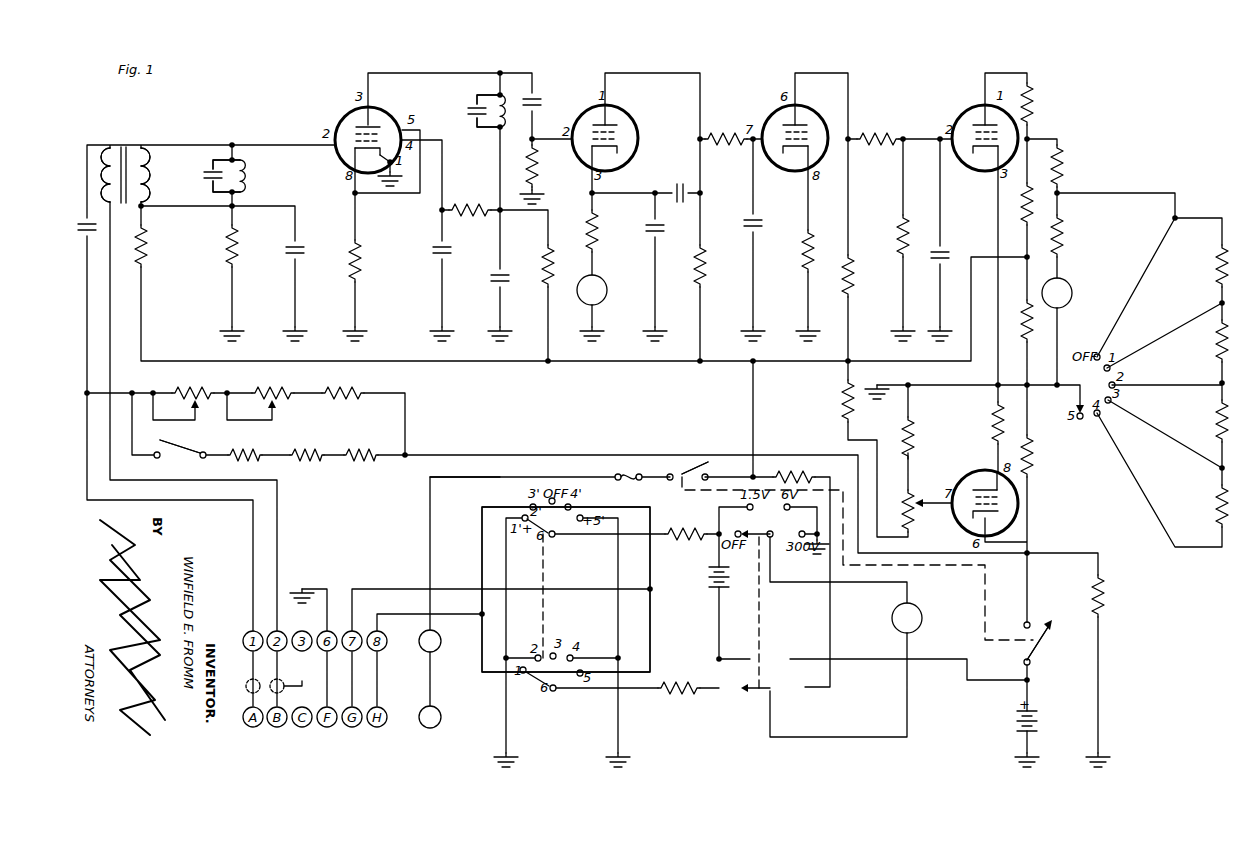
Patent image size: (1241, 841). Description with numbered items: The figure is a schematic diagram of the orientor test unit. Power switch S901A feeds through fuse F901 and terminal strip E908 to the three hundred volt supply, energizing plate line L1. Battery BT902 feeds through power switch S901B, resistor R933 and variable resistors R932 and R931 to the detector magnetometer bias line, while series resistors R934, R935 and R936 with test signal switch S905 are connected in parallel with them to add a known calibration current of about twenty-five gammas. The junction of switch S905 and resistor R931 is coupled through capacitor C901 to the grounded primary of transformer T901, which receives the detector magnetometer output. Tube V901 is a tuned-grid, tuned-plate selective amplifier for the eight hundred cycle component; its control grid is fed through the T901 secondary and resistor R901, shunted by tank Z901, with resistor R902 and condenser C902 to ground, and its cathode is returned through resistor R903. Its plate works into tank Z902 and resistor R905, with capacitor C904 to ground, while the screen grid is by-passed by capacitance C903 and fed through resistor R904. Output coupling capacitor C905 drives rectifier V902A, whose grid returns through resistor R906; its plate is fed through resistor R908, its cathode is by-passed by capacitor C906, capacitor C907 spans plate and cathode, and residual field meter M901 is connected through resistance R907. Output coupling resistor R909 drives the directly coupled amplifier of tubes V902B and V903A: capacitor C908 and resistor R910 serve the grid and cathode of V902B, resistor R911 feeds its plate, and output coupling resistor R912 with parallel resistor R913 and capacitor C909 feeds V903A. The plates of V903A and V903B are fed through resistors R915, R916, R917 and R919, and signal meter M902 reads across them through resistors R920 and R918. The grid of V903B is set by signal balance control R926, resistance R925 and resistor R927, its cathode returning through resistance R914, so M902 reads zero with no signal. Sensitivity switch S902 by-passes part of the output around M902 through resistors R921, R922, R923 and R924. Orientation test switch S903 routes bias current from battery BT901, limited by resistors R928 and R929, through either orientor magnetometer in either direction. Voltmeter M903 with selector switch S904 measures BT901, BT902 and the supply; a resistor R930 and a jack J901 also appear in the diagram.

The transformer T901 is at (122, 164).
The capacitor C901 is at (96, 228).
The resistor R901 is at (165, 246).
The tank Z901 is at (240, 170).
The resistor R902 is at (251, 246).
The condenser C902 is at (312, 250).
The resistor R903 is at (377, 259).
The amplifier tube V901 is at (376, 131).
The tank Z902 is at (479, 102).
The resistor R904 is at (470, 204).
The by-pass capacitance C903 is at (460, 247).
The capacitor C904 is at (479, 278).
The resistor R905 is at (532, 266).
The output coupling capacitor C905 is at (551, 96).
The resistor R906 is at (550, 166).
The rectifier V902A is at (620, 128).
The resistance R907 is at (610, 231).
The residual field meter M901 is at (609, 284).
The capacitor C907 is at (679, 185).
The capacitor C906 is at (675, 227).
The resistor R908 is at (719, 266).
The output coupling resistor R909 is at (726, 130).
The amplifier tube V902B is at (802, 129).
The capacitor C908 is at (771, 223).
The resistor R910 is at (792, 251).
The output coupling resistor R912 is at (878, 130).
The resistor R911 is at (868, 276).
The resistor R913 is at (922, 236).
The amplifier tube V903A is at (974, 129).
The capacitor C909 is at (957, 251).
The resistor R915 is at (1047, 104).
The resistor R916 is at (1022, 195).
The resistor R917 is at (1032, 318).
The resistor R918 is at (1045, 456).
The resistor R919 is at (1076, 166).
The meter input resistance R920 is at (1076, 236).
The signal meter M902 is at (1075, 284).
The resistor R921 is at (1203, 266).
The resistor R922 is at (1203, 341).
The resistor R923 is at (1203, 421).
The resistor R924 is at (1203, 506).
The sensitivity switch S902 is at (1091, 399).
The amplifier tube V903B is at (1014, 503).
The resistance R914 is at (978, 415).
The resistor R927 is at (928, 438).
The signal balance control R926 is at (895, 507).
The resistance R925 is at (825, 401).
The resistor R930 is at (794, 470).
The power switch S901A is at (698, 458).
The fuse F901 is at (626, 467).
The plate line L1 is at (446, 477).
The resistor R928 is at (685, 526).
The battery BT901 is at (708, 590).
The voltmeter selector switch S904 is at (772, 537).
The orientation test switch S903 is at (566, 594).
The terminal strip E908 is at (449, 641).
The jack J901 is at (447, 717).
The resistor R929 is at (677, 700).
The voltmeter M903 is at (926, 612).
The power switch S901B is at (1037, 650).
The battery BT902 is at (1051, 717).
The variable resistor R931 is at (193, 386).
The variable resistor R932 is at (273, 386).
The resistor R933 is at (343, 386).
The test signal switch S905 is at (180, 458).
The series resistor R934 is at (245, 462).
The series resistor R935 is at (305, 462).
The series resistor R936 is at (360, 462).